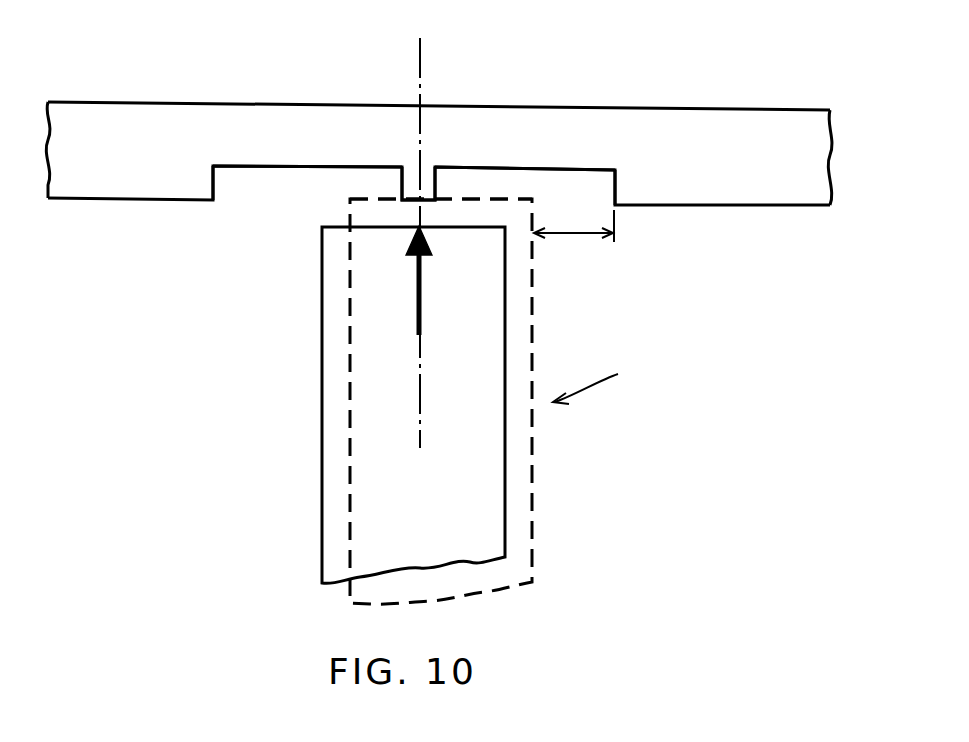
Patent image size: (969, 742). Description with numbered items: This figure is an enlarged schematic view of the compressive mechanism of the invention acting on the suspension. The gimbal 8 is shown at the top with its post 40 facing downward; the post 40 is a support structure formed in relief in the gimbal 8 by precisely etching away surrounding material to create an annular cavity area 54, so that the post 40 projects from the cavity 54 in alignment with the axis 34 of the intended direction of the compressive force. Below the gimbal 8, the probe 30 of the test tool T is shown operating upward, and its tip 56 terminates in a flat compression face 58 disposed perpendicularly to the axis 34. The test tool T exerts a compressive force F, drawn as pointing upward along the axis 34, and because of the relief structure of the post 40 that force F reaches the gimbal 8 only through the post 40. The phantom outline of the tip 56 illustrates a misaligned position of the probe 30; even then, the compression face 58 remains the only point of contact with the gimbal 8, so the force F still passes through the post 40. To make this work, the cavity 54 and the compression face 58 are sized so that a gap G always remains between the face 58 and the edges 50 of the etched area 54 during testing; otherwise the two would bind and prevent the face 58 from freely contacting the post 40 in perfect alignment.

The gimbal 8 is at (725, 128).
The edges of the etched area 50 is at (212, 180).
The annular cavity area 54 is at (297, 165).
The axis 34 is at (425, 68).
The post 40 is at (423, 195).
The probe 30 is at (316, 522).
The tip 56 is at (532, 295).
The flat compression face 58 is at (379, 228).
The compressive force F is at (420, 300).
The gap G is at (572, 232).
The test tool T is at (595, 382).